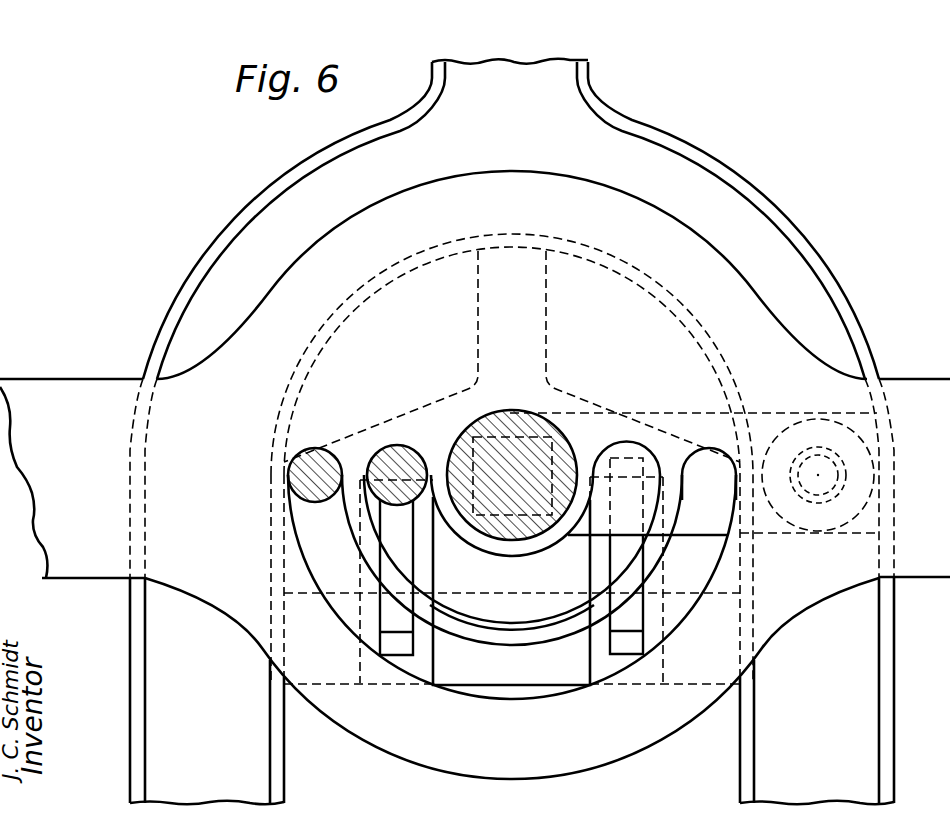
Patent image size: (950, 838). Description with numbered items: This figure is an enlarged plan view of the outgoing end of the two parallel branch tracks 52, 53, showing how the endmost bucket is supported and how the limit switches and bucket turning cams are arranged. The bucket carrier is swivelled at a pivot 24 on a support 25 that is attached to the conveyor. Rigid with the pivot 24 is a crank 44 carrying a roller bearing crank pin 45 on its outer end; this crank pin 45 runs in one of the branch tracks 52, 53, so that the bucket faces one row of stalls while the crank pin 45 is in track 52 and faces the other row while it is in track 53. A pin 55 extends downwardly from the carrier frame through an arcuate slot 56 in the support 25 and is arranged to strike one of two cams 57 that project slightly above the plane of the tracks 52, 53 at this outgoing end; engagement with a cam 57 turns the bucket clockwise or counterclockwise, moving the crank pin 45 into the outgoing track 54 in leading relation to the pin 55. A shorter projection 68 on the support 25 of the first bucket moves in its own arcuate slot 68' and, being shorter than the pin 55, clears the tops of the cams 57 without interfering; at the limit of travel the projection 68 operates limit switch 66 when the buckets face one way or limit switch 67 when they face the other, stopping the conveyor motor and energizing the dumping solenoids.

The swivel pivot 24 is at (512, 415).
The support 25 is at (756, 318).
The crank 44 is at (612, 522).
The crank pin 45 is at (742, 487).
The branch track 52 is at (817, 690).
The branch track 53 is at (207, 691).
The outgoing track 54 is at (553, 61).
The pin 55 is at (320, 448).
The arcuate slot 56 is at (447, 687).
The cam 57 is at (440, 398).
The limit switch 66 is at (422, 660).
The limit switch 67 is at (597, 657).
The projection 68 is at (506, 557).
The arcuate slot 68' is at (512, 624).